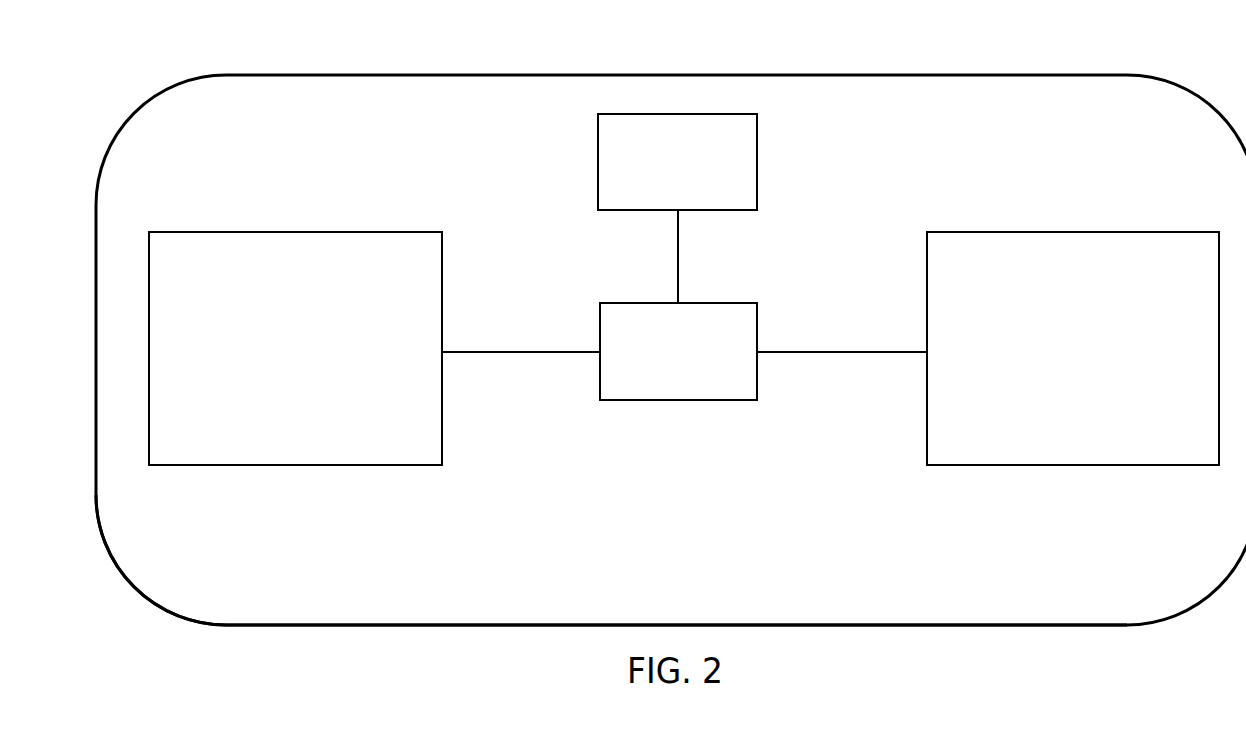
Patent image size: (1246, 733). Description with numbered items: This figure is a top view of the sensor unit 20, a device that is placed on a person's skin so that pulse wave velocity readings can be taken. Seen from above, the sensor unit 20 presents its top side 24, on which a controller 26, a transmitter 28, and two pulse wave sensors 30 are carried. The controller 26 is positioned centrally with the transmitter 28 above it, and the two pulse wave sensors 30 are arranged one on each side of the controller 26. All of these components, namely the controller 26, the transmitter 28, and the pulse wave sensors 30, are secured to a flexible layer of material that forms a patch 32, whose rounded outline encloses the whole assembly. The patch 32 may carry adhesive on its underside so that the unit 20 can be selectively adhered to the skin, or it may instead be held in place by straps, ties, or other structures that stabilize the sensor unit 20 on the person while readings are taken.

The sensor unit 20 is at (1003, 76).
The top side 24 is at (793, 528).
The controller 26 is at (723, 303).
The transmitter 28 is at (758, 158).
The pulse wave sensors 30 is at (287, 232).
The patch 32 is at (425, 585).